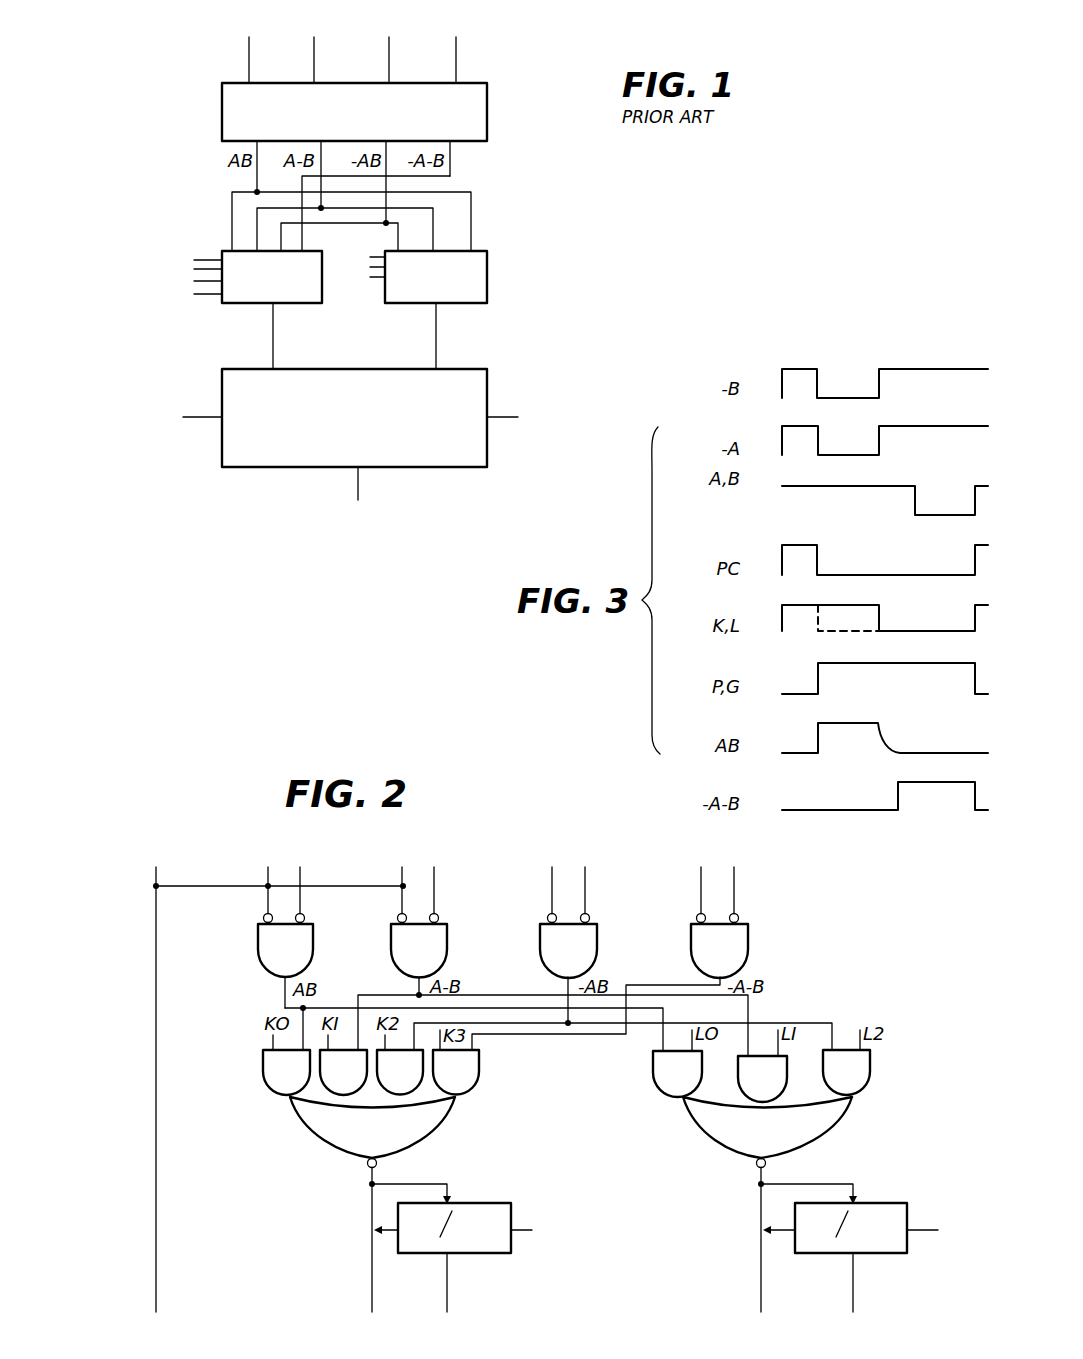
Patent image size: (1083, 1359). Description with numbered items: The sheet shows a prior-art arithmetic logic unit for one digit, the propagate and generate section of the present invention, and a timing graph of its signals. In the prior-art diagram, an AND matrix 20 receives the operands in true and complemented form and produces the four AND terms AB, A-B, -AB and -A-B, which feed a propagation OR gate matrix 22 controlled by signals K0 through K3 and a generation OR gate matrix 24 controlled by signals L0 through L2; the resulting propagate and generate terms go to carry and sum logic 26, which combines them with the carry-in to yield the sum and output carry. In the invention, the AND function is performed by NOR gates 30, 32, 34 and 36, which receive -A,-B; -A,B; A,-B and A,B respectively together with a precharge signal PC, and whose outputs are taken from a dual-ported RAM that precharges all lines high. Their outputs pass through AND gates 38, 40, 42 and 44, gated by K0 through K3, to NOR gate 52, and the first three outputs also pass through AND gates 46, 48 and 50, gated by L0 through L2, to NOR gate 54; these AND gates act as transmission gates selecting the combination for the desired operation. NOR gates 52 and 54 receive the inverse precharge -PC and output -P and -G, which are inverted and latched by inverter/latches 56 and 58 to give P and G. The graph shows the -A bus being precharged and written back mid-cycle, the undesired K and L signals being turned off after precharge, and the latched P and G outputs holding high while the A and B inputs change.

In FIG. 1, the AND matrix 20 is at (222, 118).
In FIG. 2, the AND matrix 20 is at (139, 893).
In FIG. 1, the propagation OR gate matrix 22 is at (314, 257).
In FIG. 1, the generation OR gate matrix 24 is at (487, 265).
In FIG. 1, the carry and sum logic 26 is at (266, 461).
In FIG. 2, the NOR gate 30 is at (262, 957).
In FIG. 2, the NOR gate 32 is at (394, 957).
In FIG. 2, the NOR gate 34 is at (543, 958).
In FIG. 2, the NOR gate 36 is at (695, 957).
In FIG. 2, the AND gate 38 is at (270, 1079).
In FIG. 2, the AND gate 40 is at (331, 1085).
In FIG. 2, the AND gate 42 is at (410, 1085).
In FIG. 2, the AND gate 44 is at (476, 1069).
In FIG. 2, the AND gate 46 is at (699, 1078).
In FIG. 2, the AND gate 48 is at (786, 1078).
In FIG. 2, the AND gate 50 is at (872, 1077).
In FIG. 2, the NOR gate 52 is at (355, 1136).
In FIG. 2, the NOR gate 54 is at (775, 1128).
In FIG. 2, the inverter/latch 56 is at (504, 1203).
In FIG. 2, the inverter/latch 58 is at (908, 1205).